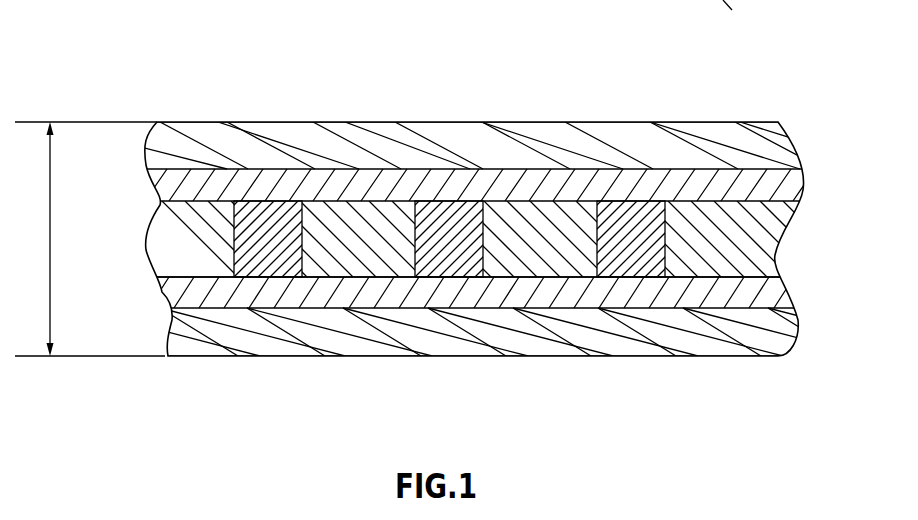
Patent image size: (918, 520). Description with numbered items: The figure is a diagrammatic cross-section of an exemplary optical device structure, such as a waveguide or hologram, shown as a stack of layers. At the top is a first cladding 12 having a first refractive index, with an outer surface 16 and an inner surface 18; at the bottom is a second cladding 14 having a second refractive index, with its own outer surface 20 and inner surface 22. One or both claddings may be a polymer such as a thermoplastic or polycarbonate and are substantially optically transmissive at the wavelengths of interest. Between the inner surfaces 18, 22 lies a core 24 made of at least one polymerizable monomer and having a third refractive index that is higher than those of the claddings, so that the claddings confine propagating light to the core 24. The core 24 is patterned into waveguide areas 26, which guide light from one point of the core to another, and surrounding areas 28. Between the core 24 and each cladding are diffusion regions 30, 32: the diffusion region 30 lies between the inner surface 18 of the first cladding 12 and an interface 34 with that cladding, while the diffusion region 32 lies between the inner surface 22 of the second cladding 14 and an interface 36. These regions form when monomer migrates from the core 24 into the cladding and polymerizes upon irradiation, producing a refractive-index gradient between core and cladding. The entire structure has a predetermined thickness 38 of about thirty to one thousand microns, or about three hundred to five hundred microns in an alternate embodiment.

The first cladding 12 is at (530, 127).
The second cladding 14 is at (538, 350).
The outer surface 16 is at (700, 122).
The inner surface 18 is at (785, 217).
The outer surface 20 is at (703, 358).
The inner surface 22 is at (753, 276).
The core 24 is at (128, 240).
The waveguide areas 26 is at (263, 203).
The surrounding areas 28 is at (357, 227).
The diffusion region 30 is at (161, 184).
The diffusion region 32 is at (161, 291).
The interface 34 is at (768, 170).
The interface 36 is at (755, 308).
The predetermined thickness 38 is at (48, 240).